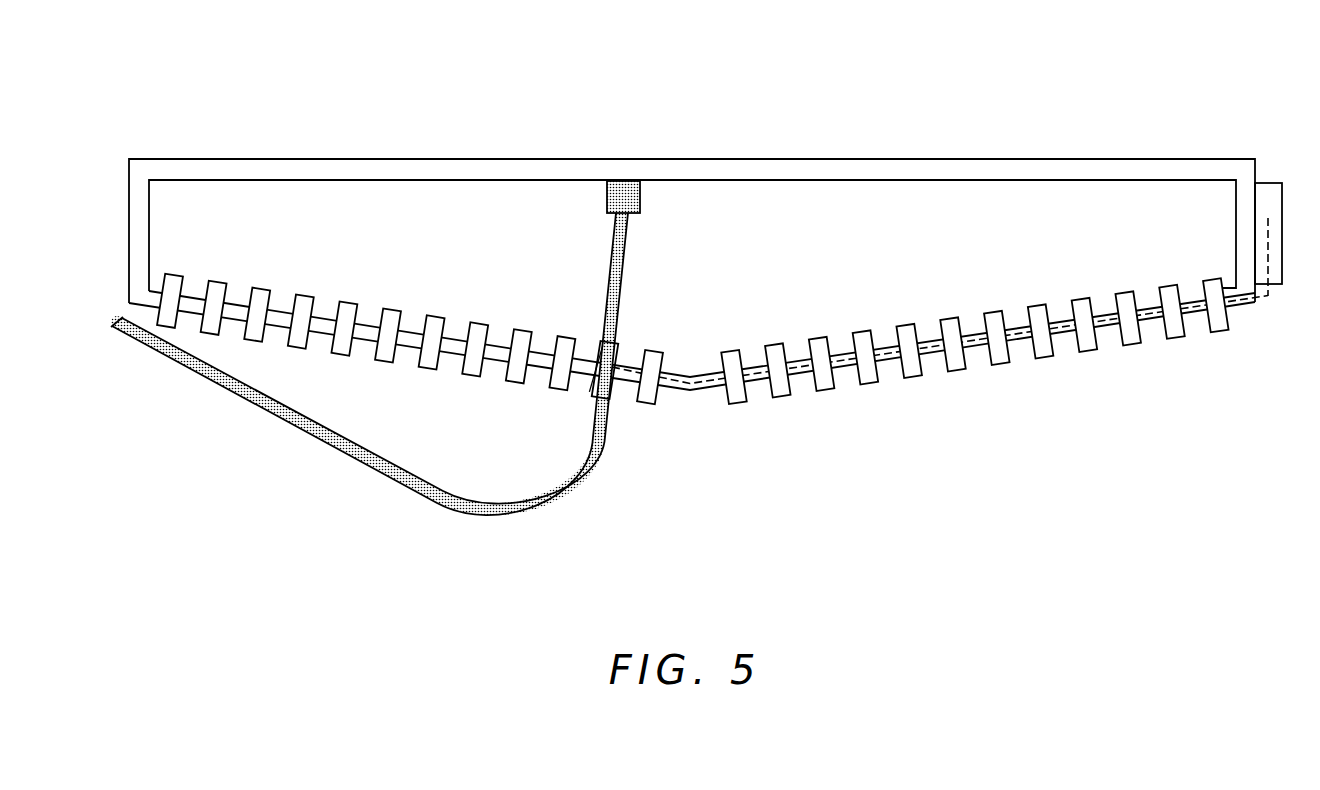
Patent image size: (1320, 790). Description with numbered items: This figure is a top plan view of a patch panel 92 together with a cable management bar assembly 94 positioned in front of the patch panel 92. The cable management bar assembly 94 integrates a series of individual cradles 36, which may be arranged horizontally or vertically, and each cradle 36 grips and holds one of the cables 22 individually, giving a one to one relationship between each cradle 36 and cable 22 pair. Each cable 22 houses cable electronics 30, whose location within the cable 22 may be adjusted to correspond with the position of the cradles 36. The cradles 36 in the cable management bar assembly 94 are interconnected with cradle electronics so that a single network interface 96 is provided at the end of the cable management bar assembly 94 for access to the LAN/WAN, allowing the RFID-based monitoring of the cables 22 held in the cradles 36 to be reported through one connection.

The cable 22 is at (562, 502).
The cable electronics 30 is at (606, 365).
The cradle 36 is at (613, 396).
The patch panel 92 is at (367, 172).
The cable management bar assembly 94 is at (1063, 337).
The network interface 96 is at (1267, 218).